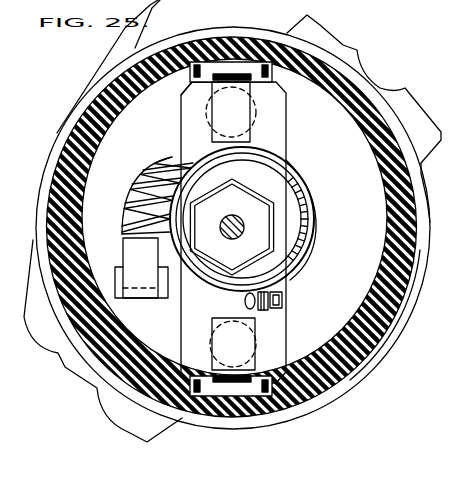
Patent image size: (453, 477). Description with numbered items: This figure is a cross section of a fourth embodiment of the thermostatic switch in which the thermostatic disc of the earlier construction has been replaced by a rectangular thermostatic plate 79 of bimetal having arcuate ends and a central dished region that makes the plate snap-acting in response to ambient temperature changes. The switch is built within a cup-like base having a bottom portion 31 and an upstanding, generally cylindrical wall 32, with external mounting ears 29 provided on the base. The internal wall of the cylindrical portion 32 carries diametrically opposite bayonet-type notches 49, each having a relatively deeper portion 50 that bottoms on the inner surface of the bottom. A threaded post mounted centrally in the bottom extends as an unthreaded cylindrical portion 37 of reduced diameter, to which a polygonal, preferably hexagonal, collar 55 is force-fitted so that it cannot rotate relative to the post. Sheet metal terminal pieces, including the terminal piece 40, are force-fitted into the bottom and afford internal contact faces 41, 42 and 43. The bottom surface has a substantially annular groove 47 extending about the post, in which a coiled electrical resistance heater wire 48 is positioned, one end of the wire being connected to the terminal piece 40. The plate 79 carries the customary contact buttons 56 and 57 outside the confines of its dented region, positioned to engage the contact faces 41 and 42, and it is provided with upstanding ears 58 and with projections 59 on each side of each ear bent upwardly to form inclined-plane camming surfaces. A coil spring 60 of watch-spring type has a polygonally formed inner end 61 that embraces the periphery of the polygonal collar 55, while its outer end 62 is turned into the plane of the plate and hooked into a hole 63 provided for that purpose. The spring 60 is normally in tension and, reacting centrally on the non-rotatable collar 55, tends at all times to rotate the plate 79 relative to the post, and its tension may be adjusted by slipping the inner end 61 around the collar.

The mounting ears 29 is at (360, 53).
The bayonet-type notches 49 is at (215, 24).
The bottom portion 31 is at (248, 427).
The projections 59 is at (292, 50).
The upstanding cylindrical wall 32 is at (345, 378).
The thermostatic plate 79 is at (276, 143).
The internal contact face 41 is at (226, 80).
The relatively deeper portions 50 is at (229, 62).
The contact button 56 is at (256, 118).
The upstanding ears 58 is at (231, 112).
The contact button 57 is at (210, 337).
The internal contact face 42 is at (258, 345).
The coil spring 60 is at (270, 148).
The inner end of spring 61 is at (278, 204).
The unthreaded cylindrical portion 37 is at (239, 216).
The resistance heater wire 48 is at (128, 202).
The annular groove 47 is at (138, 185).
The internal contact face 43 is at (135, 254).
The terminal piece 40 is at (166, 293).
The polygonal collar 55 is at (222, 256).
The hole 63 is at (245, 306).
The outer end of spring 62 is at (262, 309).